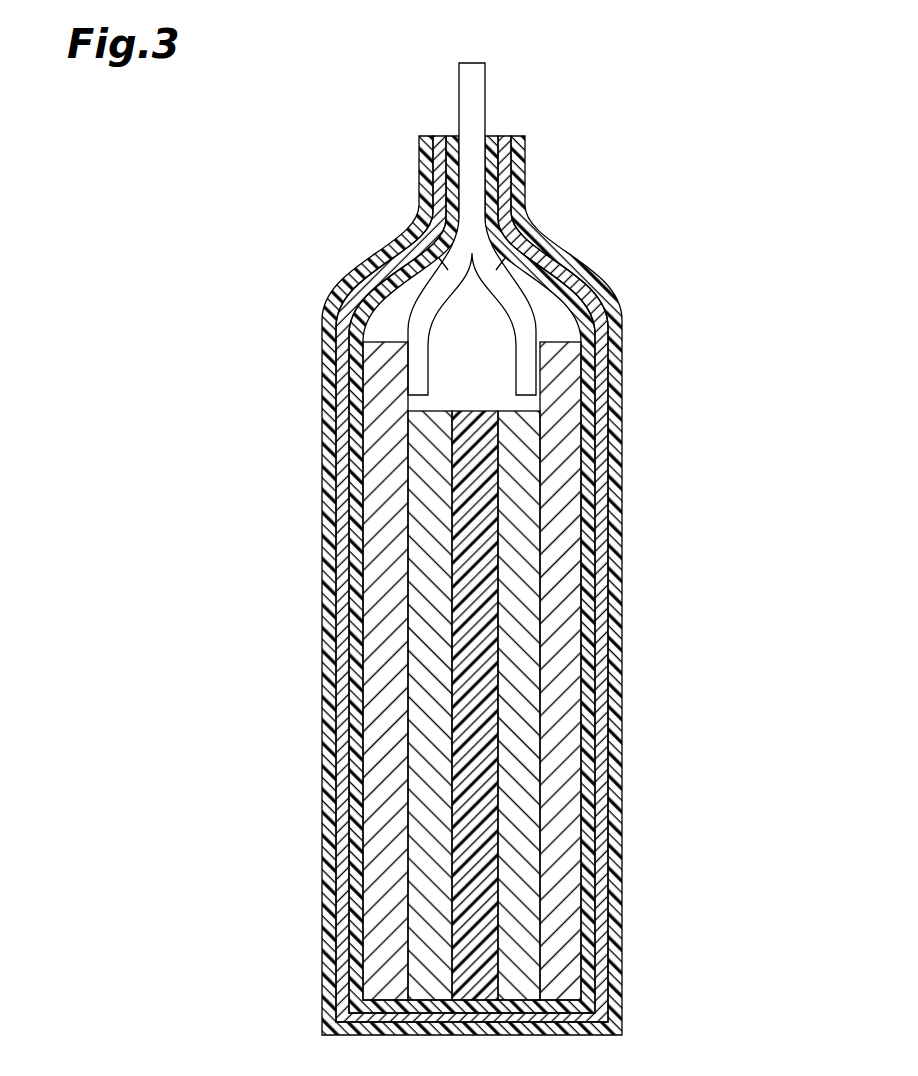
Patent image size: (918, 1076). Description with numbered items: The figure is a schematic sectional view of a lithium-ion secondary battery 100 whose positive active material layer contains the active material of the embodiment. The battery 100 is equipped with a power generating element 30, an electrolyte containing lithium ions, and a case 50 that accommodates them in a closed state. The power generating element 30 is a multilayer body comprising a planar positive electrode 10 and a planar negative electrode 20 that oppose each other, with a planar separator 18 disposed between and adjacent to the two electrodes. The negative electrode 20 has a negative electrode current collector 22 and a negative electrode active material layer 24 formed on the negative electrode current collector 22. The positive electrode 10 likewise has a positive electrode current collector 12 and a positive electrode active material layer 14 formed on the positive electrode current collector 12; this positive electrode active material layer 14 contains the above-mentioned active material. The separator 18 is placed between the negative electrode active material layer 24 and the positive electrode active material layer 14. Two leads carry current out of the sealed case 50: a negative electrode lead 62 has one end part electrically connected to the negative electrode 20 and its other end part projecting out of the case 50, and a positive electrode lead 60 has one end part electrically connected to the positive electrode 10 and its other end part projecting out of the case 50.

The lithium-ion secondary battery 100 is at (688, 91).
The case 50 is at (625, 635).
The positive electrode lead 60 is at (398, 253).
The negative electrode lead 62 is at (513, 253).
The power generating element 30 is at (203, 522).
The positive electrode 10 is at (252, 505).
The positive electrode current collector 12 is at (540, 500).
The positive electrode active material layer 14 is at (517, 548).
The separator 18 is at (470, 578).
The negative electrode 20 is at (252, 598).
The negative electrode current collector 22 is at (385, 630).
The negative electrode active material layer 24 is at (425, 603).